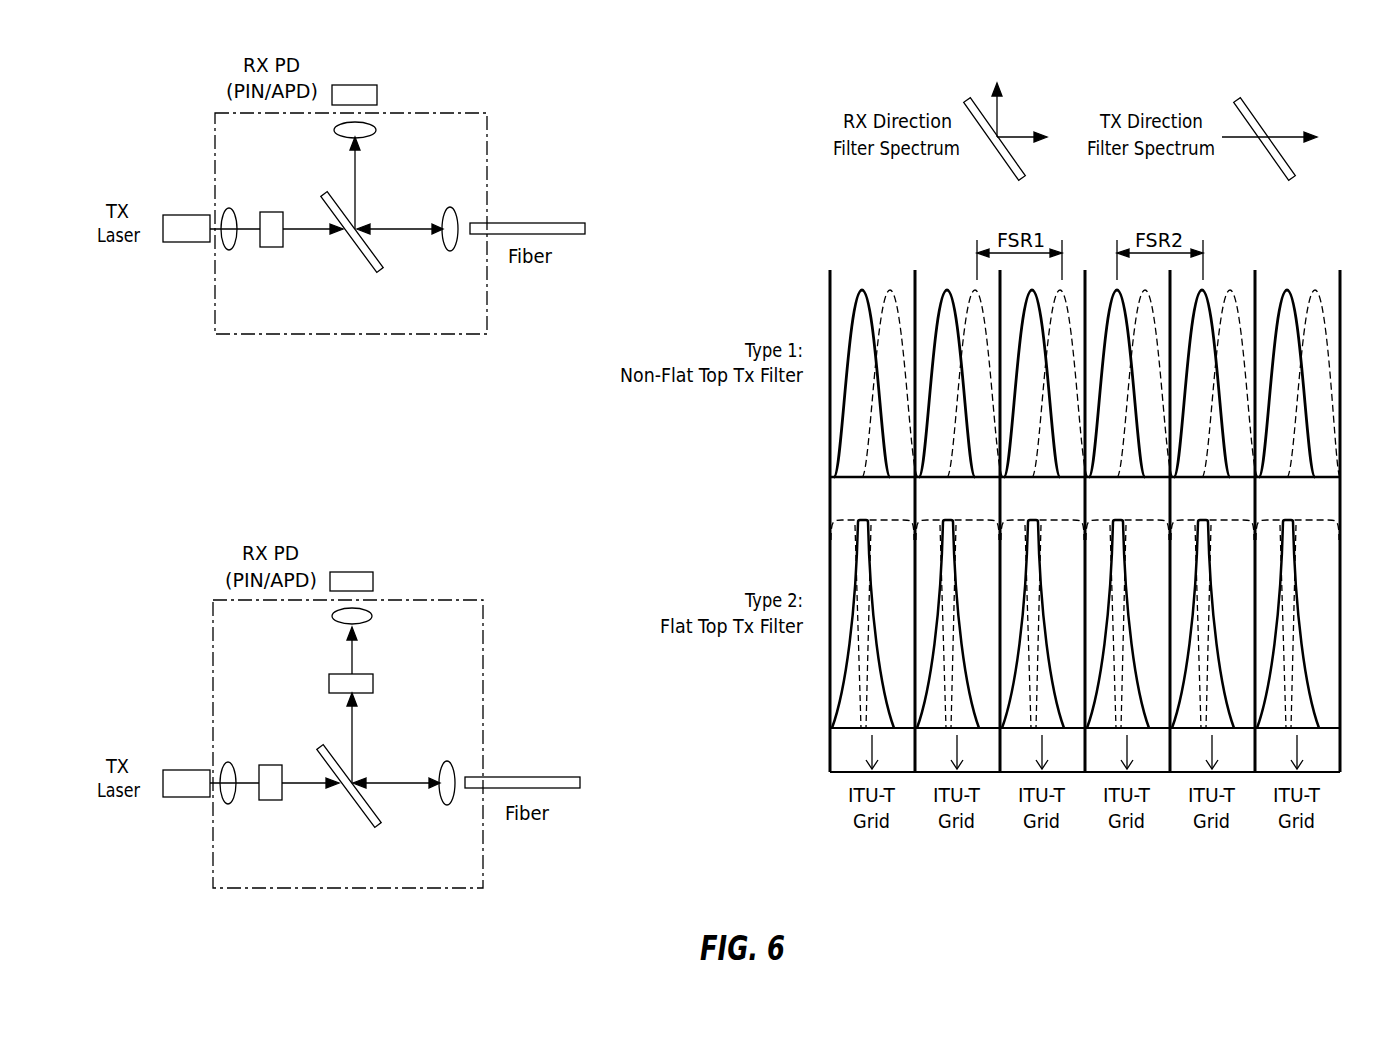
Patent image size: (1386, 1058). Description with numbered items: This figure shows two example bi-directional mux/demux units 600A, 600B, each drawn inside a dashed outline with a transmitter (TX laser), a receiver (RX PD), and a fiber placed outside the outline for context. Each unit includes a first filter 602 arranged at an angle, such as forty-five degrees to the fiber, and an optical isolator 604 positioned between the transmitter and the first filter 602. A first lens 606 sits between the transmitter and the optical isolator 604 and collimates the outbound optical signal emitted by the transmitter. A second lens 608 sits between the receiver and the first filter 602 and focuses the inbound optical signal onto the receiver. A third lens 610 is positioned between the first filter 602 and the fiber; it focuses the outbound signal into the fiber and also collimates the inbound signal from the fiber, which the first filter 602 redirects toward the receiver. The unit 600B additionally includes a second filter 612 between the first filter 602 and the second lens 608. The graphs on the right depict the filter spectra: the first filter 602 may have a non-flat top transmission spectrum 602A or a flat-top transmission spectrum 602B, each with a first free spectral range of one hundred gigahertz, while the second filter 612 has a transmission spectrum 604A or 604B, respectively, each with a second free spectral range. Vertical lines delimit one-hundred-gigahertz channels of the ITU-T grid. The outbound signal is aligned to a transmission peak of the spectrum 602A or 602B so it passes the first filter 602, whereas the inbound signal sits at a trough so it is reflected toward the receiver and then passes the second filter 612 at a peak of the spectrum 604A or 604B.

The bi-di mux/demux unit 600A is at (487, 113).
The bi-di mux/demux unit 600B is at (483, 600).
The first filter 602 is at (382, 272).
The optical isolator 604 is at (260, 213).
The first lens 606 is at (224, 247).
The second lens 608 is at (376, 129).
The third lens 610 is at (455, 247).
The second filter 612 is at (329, 683).
The transmission spectrum 604A is at (861, 290).
The non-flat top transmission spectrum 602A is at (890, 290).
The flat-top transmission spectrum 602B is at (897, 517).
The transmission spectrum 604B is at (850, 610).